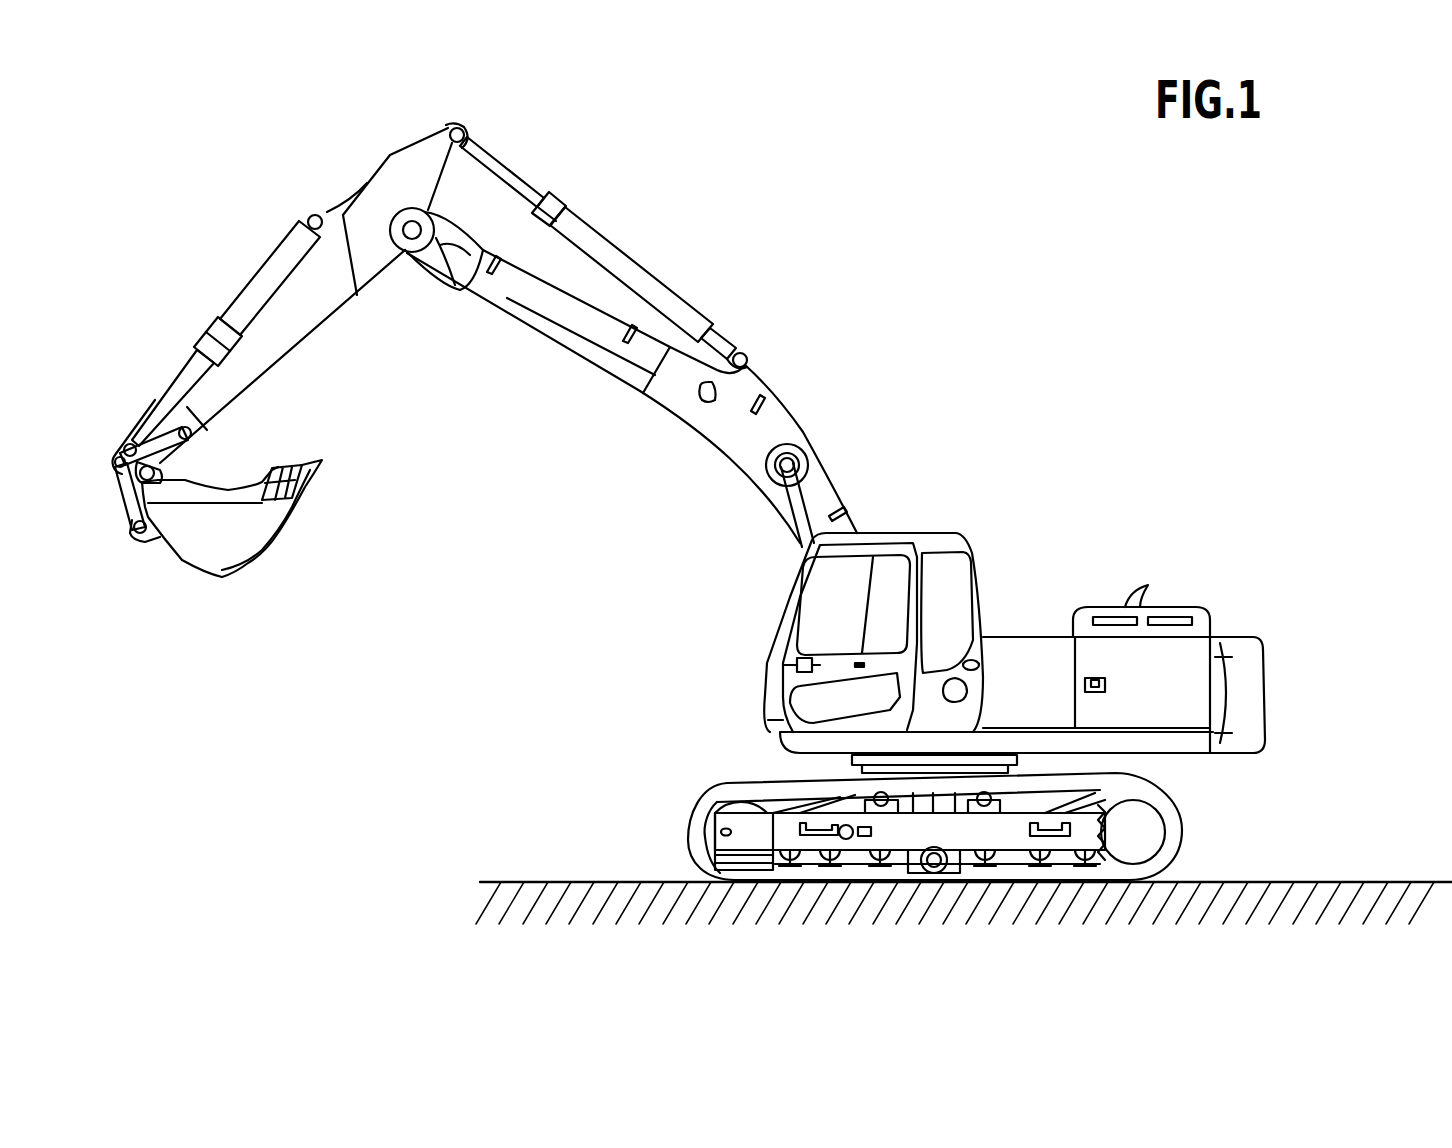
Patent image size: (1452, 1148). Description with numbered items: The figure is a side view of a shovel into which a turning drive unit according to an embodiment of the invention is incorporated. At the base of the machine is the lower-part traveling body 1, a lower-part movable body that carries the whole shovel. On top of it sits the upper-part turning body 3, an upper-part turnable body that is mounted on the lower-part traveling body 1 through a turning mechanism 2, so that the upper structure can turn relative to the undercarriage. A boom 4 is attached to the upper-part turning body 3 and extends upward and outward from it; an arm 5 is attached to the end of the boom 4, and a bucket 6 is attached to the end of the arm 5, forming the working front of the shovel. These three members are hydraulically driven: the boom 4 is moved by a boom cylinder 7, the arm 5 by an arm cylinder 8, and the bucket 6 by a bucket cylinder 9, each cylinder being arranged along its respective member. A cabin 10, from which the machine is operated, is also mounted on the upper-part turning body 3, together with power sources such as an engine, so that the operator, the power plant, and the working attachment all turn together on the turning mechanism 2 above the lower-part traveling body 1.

The lower-part traveling body 1 is at (688, 822).
The turning mechanism 2 is at (1010, 766).
The upper-part turning body 3 is at (1032, 637).
The boom 4 is at (682, 412).
The arm 5 is at (322, 313).
The bucket 6 is at (212, 568).
The boom cylinder 7 is at (803, 507).
The arm cylinder 8 is at (667, 297).
The bucket cylinder 9 is at (248, 292).
The cabin 10 is at (960, 533).